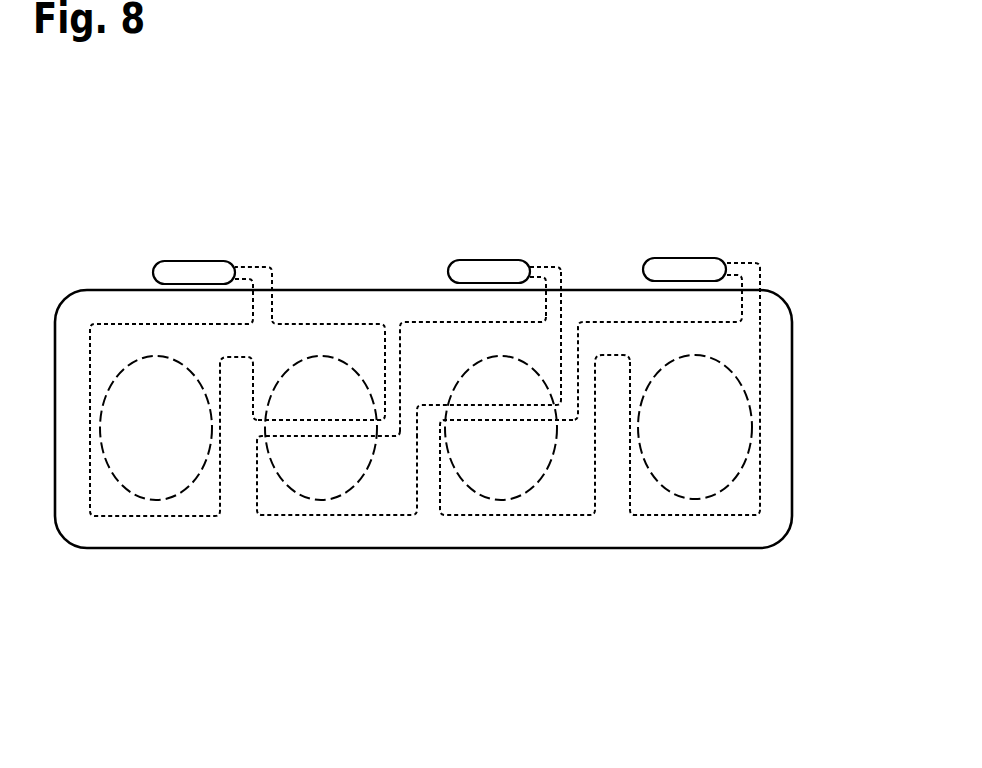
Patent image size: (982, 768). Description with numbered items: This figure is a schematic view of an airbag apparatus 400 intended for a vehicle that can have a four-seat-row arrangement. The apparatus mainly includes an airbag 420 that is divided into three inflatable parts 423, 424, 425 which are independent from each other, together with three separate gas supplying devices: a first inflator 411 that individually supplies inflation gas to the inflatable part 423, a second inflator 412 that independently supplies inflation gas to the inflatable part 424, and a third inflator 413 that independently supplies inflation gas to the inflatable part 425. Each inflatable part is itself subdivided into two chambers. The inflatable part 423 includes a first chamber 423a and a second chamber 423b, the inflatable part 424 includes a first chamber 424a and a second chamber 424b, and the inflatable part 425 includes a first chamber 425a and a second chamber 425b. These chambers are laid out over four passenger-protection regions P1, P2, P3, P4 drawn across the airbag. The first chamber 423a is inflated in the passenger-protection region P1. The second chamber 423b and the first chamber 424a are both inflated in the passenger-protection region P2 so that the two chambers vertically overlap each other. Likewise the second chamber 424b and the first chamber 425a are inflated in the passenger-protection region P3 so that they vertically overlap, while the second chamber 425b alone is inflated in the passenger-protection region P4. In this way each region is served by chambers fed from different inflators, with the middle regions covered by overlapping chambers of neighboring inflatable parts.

The airbag apparatus 400 is at (447, 326).
The first inflator 411 is at (193, 270).
The second inflator 412 is at (488, 268).
The third inflator 413 is at (690, 272).
The airbag 420 is at (788, 299).
The inflatable part 423 is at (237, 481).
The first chamber 423a is at (163, 516).
The second chamber 423b is at (290, 418).
The inflatable part 424 is at (409, 481).
The first chamber 424a is at (346, 540).
The second chamber 424b is at (492, 406).
The inflatable part 425 is at (600, 479).
The first chamber 425a is at (563, 518).
The second chamber 425b is at (678, 516).
The passenger-protection region P1 is at (145, 482).
The passenger-protection region P2 is at (322, 490).
The passenger-protection region P3 is at (517, 483).
The passenger-protection region P4 is at (700, 480).